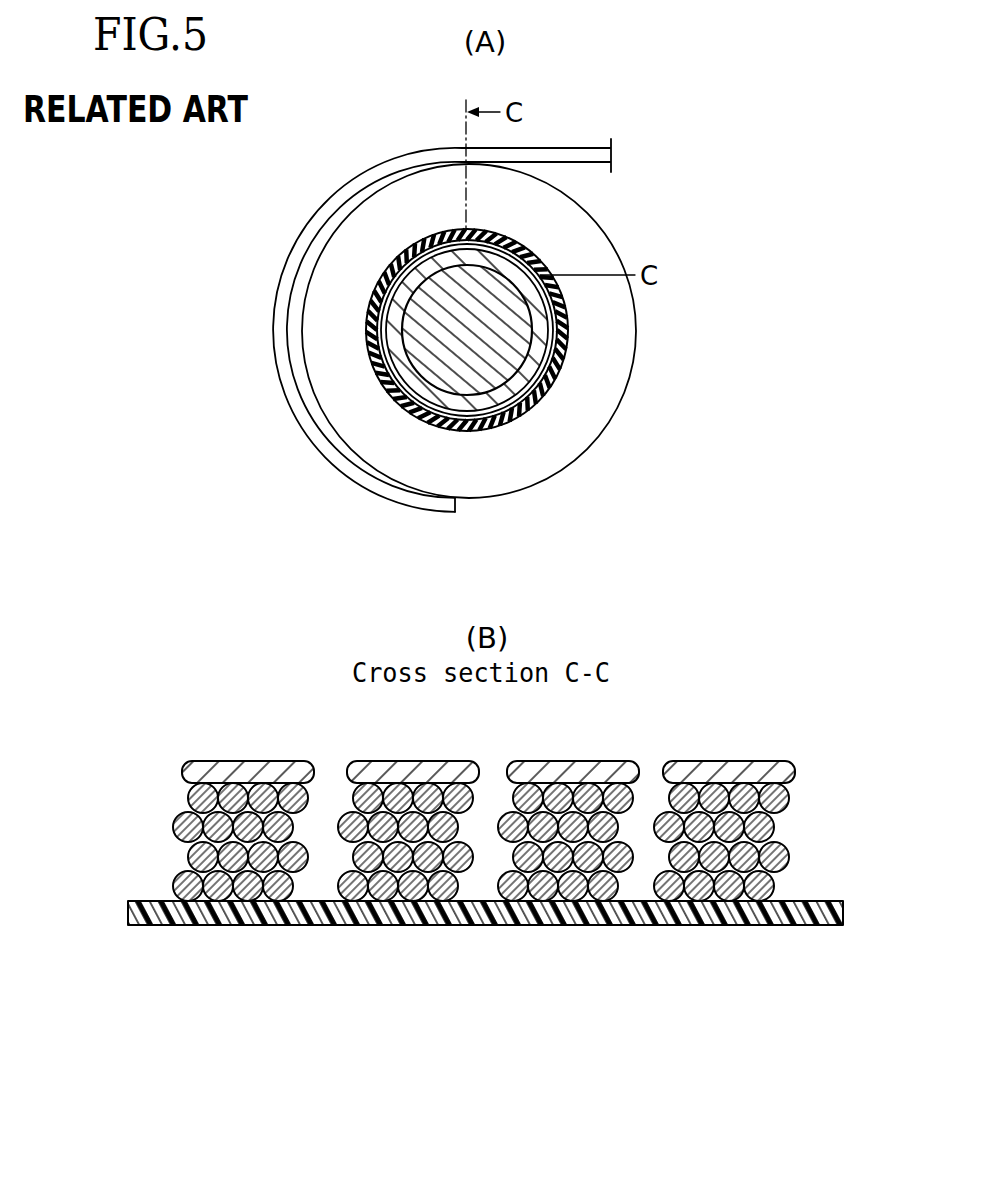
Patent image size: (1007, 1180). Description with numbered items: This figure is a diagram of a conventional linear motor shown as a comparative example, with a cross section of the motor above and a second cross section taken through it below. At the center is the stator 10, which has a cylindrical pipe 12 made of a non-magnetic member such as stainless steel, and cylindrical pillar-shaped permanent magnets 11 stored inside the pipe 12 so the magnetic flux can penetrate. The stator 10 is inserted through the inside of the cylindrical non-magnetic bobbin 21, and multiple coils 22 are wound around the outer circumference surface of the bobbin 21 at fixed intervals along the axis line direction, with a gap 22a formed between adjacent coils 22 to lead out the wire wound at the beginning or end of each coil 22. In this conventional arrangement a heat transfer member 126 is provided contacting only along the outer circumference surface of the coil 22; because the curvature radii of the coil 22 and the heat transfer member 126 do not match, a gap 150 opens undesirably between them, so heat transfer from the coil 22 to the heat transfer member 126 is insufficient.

The stator 10 is at (547, 390).
The permanent magnet 11 is at (498, 325).
The pipe 12 is at (513, 410).
The bobbin 21 is at (375, 350).
The coil 22 is at (605, 327).
The gap 22a is at (325, 807).
The heat transfer member 126 is at (335, 205).
The gap 150 is at (294, 320).